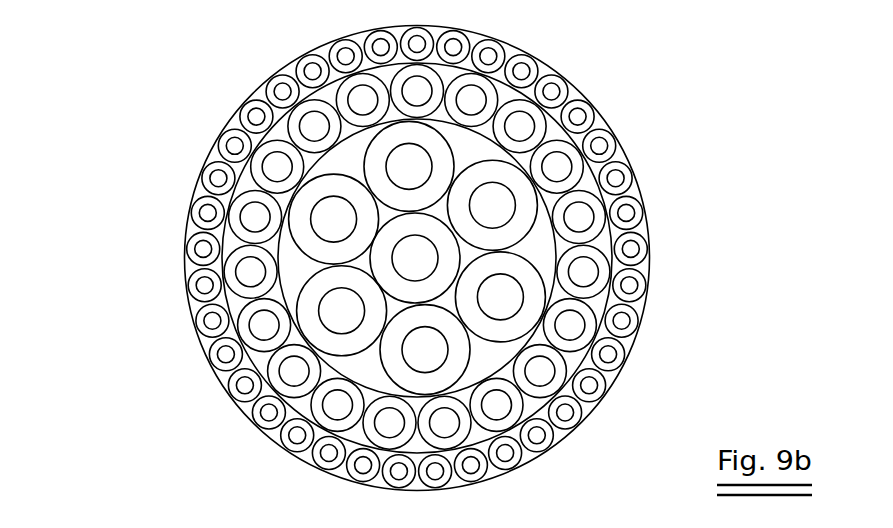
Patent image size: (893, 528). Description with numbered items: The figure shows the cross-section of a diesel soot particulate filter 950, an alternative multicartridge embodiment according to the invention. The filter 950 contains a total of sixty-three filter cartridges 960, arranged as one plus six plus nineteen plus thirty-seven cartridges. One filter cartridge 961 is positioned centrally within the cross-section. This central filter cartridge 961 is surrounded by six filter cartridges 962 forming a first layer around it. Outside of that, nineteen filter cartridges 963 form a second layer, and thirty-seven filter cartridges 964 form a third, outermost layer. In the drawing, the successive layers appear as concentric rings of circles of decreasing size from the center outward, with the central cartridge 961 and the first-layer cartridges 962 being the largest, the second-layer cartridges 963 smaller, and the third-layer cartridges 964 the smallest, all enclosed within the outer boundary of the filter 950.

The diesel soot particulate filter 950 is at (160, 73).
The filter cartridges 960 is at (437, 243).
The central filter cartridge 961 is at (380, 258).
The filter cartridges in first layer 962 is at (533, 293).
The filter cartridges in second layer 963 is at (597, 213).
The filter cartridges in third layer 964 is at (593, 115).